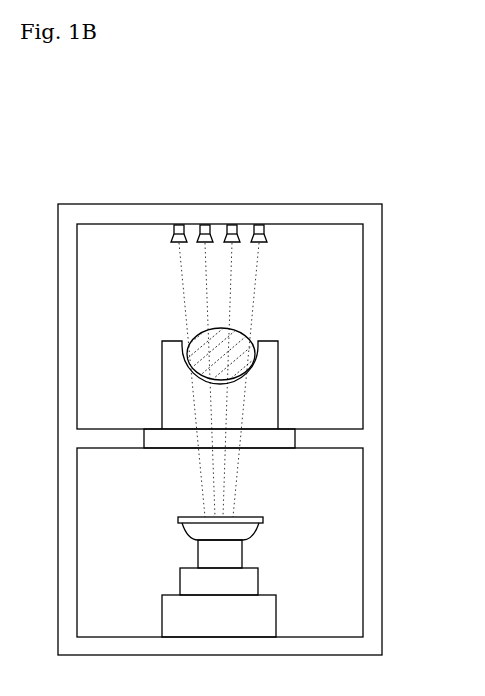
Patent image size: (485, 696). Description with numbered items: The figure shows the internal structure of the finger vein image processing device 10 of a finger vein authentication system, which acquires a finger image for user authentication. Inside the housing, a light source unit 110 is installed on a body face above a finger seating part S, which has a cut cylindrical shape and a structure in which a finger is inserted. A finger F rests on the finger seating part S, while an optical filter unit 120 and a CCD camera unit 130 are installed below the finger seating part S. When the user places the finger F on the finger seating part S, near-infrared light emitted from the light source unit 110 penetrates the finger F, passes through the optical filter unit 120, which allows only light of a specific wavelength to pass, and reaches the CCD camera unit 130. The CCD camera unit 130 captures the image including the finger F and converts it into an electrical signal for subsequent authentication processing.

The finger vein image processing device 10 is at (256, 180).
The light source unit 110 is at (158, 240).
The finger F is at (247, 331).
The finger seating part S is at (265, 378).
The optical filter unit 120 is at (278, 438).
The CCD camera unit 130 is at (250, 586).